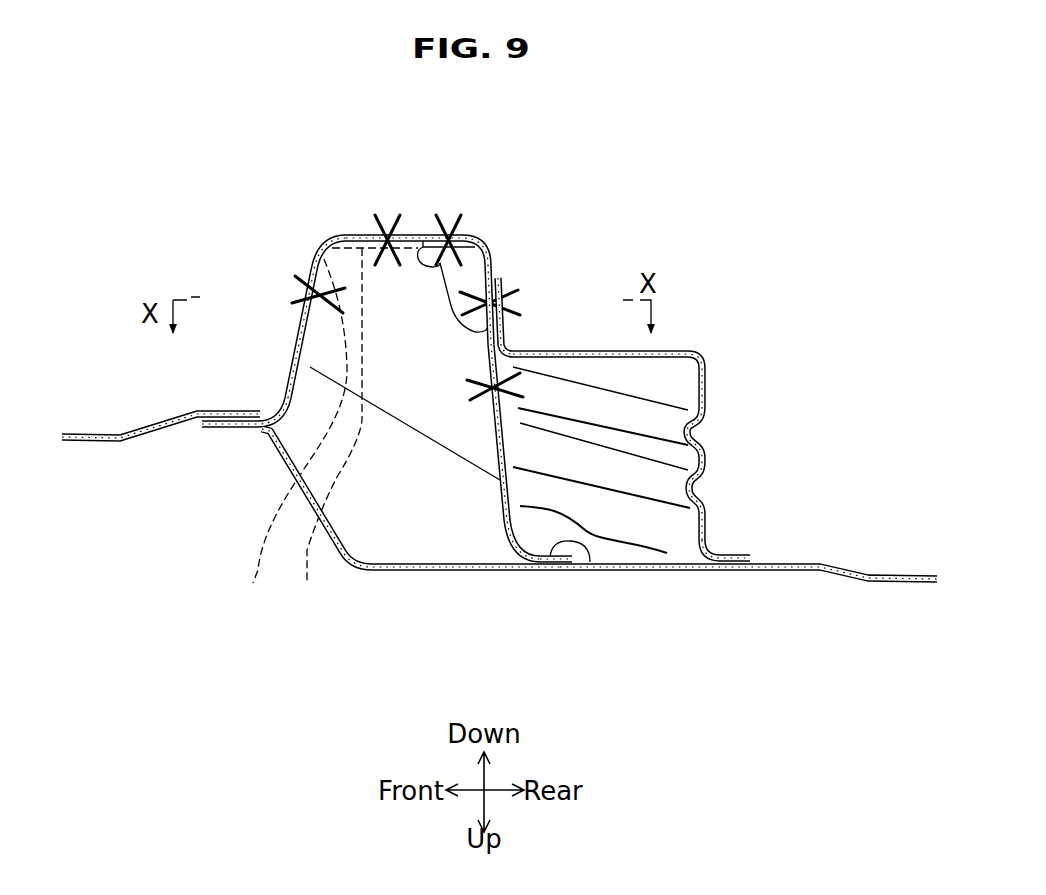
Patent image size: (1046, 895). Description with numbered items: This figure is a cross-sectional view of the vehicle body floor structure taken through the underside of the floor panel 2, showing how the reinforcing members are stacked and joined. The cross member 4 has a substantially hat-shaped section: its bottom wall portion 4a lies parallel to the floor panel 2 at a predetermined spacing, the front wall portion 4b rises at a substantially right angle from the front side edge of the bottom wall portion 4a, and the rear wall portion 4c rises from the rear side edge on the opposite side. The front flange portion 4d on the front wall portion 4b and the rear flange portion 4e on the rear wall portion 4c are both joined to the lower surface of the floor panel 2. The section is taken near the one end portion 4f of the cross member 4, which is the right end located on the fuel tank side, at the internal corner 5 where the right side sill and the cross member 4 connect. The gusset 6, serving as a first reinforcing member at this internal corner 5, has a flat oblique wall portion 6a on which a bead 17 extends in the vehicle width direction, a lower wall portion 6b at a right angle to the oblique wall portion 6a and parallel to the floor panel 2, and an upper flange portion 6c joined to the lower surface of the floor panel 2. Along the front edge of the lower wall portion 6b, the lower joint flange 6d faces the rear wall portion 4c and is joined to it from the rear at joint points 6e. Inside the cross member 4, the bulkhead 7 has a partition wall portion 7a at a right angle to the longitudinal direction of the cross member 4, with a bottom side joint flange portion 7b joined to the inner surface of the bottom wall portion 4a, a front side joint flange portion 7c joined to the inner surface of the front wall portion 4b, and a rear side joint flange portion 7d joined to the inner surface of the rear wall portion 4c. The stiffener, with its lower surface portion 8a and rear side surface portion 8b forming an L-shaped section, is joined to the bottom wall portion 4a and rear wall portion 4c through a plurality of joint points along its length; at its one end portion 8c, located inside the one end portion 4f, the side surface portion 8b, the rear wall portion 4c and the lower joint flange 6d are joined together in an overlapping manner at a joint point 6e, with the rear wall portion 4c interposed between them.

The floor panel 2 is at (868, 566).
The cross member 4 is at (395, 391).
The bottom wall portion 4a is at (375, 230).
The front wall portion 4b is at (303, 332).
The rear wall portion 4c is at (486, 353).
The front flange portion 4d is at (241, 410).
The rear flange portion 4e is at (590, 562).
The one end portion of the cross member 4f is at (498, 248).
The internal corner 5 is at (655, 417).
The gusset 6 is at (655, 382).
The oblique wall portion 6a is at (692, 458).
The lower wall portion 6b is at (670, 351).
The upper flange portion 6c is at (739, 556).
The lower joint flange 6d is at (510, 310).
The joint points 6e is at (517, 303).
The bulkhead 7 is at (392, 463).
The partition wall portion 7a is at (385, 380).
The bottom side joint flange portion 7b is at (326, 432).
The front side joint flange portion 7c is at (326, 432).
The rear side joint flange portion 7d is at (510, 422).
The lower surface portion 8a is at (427, 240).
The rear side surface portion 8b is at (466, 266).
The one end portion of the stiffener 8c is at (467, 180).
The bead 17 is at (658, 476).